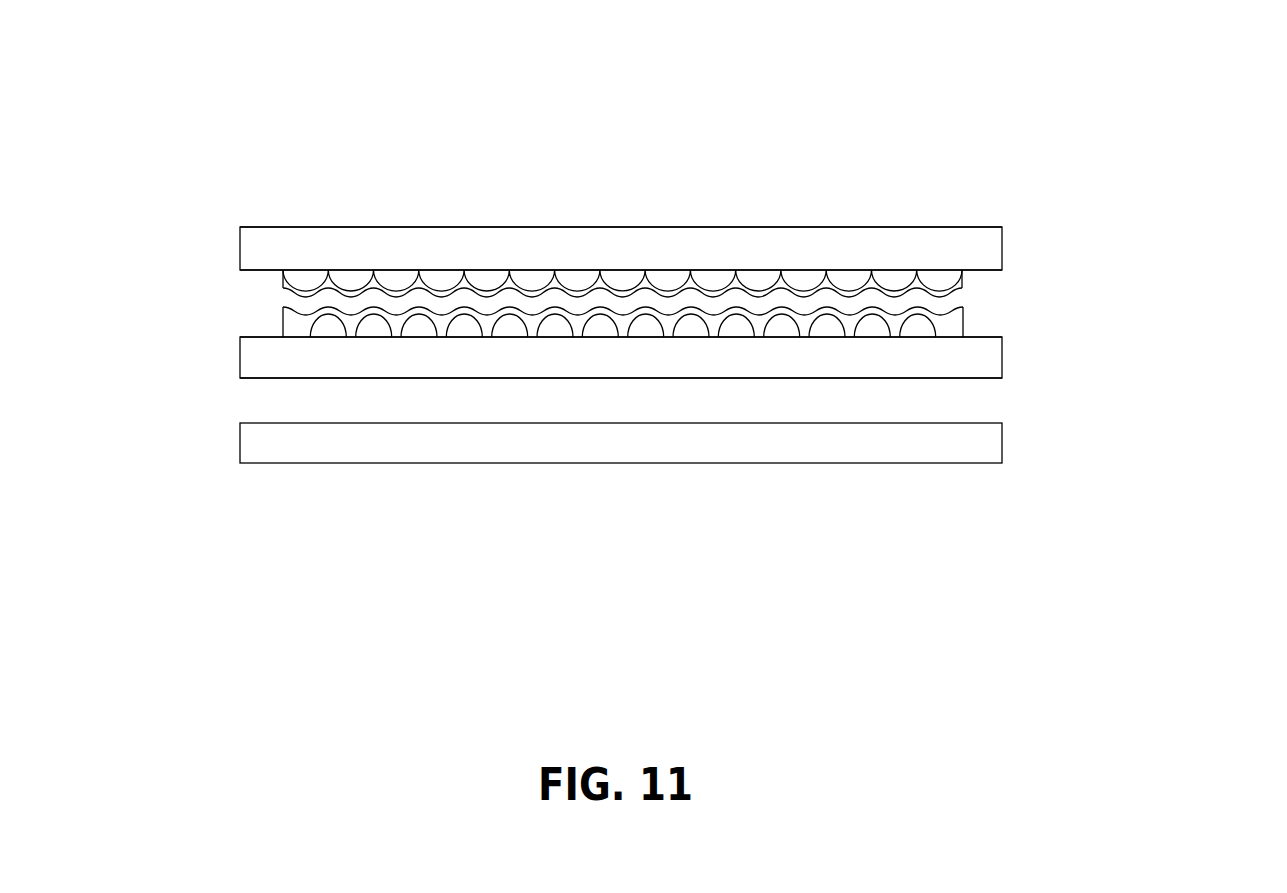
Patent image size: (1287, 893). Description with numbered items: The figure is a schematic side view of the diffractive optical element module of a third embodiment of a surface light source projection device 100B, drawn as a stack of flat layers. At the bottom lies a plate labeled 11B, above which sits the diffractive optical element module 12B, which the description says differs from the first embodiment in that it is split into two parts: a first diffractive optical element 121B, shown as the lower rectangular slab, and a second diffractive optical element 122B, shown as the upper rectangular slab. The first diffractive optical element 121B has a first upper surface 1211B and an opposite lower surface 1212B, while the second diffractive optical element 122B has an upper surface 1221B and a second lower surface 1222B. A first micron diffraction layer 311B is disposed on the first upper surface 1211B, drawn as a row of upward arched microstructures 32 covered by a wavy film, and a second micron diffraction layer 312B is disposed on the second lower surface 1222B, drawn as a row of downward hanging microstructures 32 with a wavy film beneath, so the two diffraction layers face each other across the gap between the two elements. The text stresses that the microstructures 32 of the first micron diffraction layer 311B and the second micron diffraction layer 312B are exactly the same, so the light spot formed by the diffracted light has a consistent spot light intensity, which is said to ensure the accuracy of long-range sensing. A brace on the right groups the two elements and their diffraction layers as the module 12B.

The surface light source projection device 100B is at (190, 46).
The diffractive optical element module 12B is at (1181, 240).
The display panel 11B is at (1002, 443).
The first diffractive optical element 121B is at (1002, 357).
The second diffractive optical element 122B is at (1002, 247).
The first upper surface 1211B is at (260, 337).
The bottom surface of first substrate 1212B is at (262, 378).
The top surface of second substrate 1221B is at (262, 227).
The second lower surface 1222B is at (262, 270).
The first micron diffraction layer 311B is at (963, 320).
The second micron diffraction layer 312B is at (962, 276).
The microstructures 32 is at (470, 278).